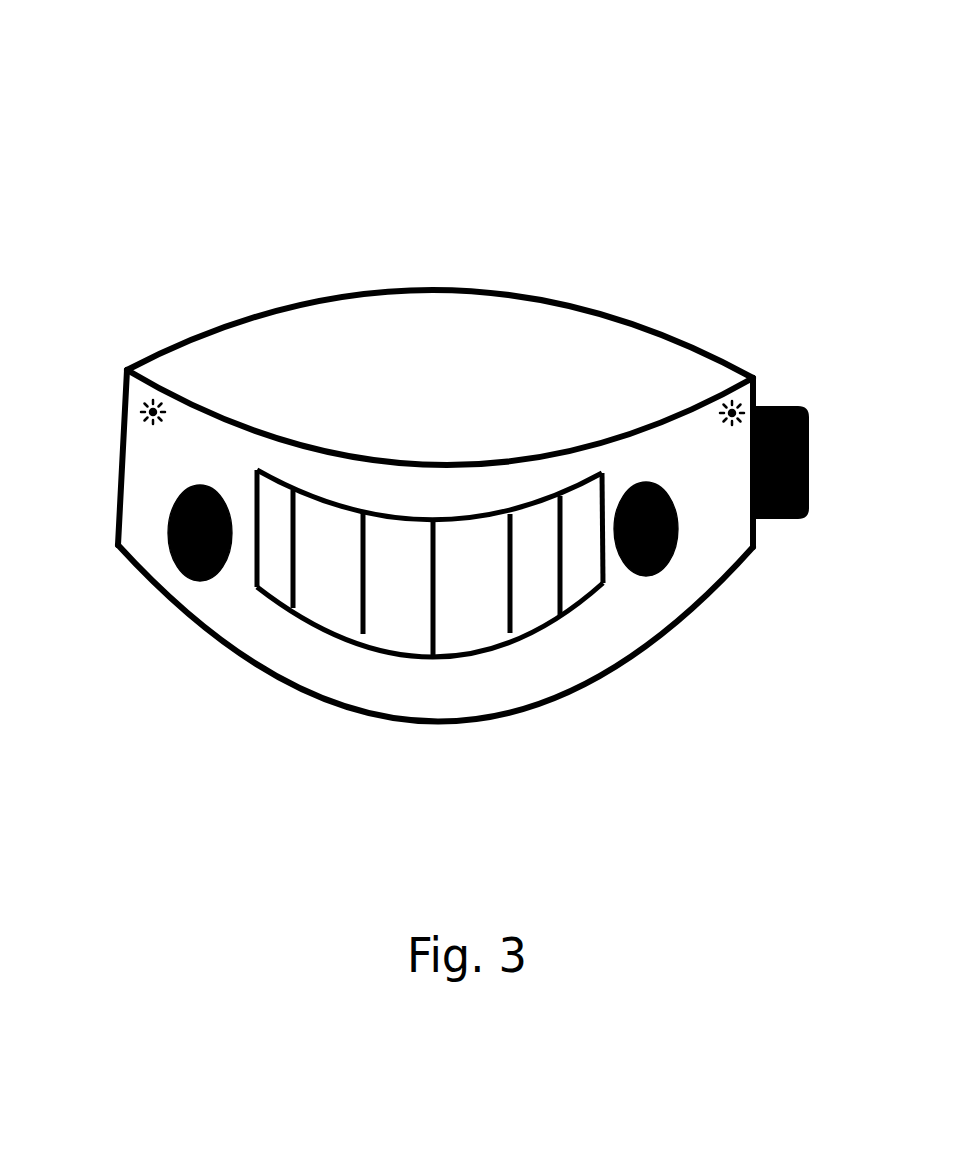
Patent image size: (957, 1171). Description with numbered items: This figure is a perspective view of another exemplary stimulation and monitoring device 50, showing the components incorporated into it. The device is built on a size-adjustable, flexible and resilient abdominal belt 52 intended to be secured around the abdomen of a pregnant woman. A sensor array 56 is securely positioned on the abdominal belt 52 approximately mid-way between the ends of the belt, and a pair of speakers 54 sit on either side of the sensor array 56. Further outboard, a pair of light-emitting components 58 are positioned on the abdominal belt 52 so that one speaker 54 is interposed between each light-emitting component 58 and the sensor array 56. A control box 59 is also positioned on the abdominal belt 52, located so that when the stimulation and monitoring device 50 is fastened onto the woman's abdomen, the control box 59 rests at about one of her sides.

The stimulation and monitoring device 50 is at (452, 183).
The abdominal belt 52 is at (243, 667).
The speakers 54 is at (178, 572).
The sensor array 56 is at (495, 648).
The light-emitting components 58 is at (205, 433).
The control box 59 is at (797, 407).